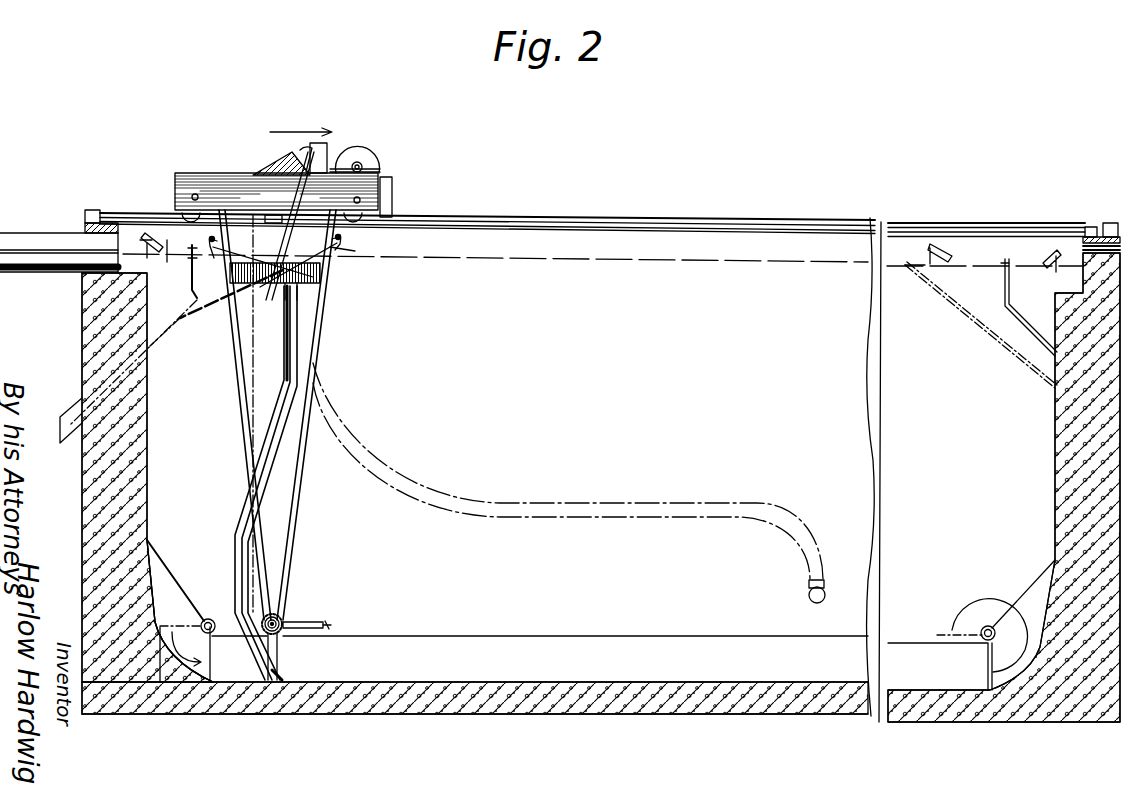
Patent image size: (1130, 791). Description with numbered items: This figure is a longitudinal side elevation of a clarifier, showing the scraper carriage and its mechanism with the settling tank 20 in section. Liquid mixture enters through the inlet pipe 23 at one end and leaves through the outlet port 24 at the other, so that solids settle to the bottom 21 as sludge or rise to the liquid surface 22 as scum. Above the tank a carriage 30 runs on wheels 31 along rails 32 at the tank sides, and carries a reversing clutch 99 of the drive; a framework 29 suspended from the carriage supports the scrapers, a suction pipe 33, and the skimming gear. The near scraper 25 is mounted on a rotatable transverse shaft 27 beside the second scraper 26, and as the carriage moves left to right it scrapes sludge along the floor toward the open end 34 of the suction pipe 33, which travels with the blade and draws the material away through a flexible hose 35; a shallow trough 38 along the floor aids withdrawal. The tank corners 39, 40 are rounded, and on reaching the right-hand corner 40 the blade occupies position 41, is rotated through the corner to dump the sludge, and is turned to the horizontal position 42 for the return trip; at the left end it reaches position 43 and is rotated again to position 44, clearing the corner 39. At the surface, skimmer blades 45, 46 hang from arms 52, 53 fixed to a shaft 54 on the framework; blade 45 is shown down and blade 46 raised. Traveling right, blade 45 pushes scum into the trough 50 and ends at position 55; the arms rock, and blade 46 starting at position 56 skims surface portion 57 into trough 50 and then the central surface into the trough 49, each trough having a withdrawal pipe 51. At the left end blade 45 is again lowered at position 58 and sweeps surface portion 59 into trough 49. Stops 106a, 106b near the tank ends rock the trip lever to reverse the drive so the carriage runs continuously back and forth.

The settling tank 20 is at (143, 442).
The bottom 21 is at (598, 683).
The liquid surface 22 is at (622, 261).
The inlet pipe 23 is at (27, 266).
The outlet port 24 is at (1087, 232).
The scraper 25 is at (280, 661).
The scraper 26 is at (325, 627).
The transverse shaft 27 is at (282, 619).
The framework 29 is at (303, 482).
The carriage 30 is at (197, 175).
The wheels 31 is at (168, 252).
The rails 32 is at (585, 212).
The suction pipe 33 is at (288, 356).
The open end 34 is at (257, 712).
The flexible hose 35 is at (455, 498).
The shallow trough 38 is at (467, 684).
The rounded corner 39 is at (173, 668).
The rounded corner 40 is at (1020, 694).
The blade position 41 is at (986, 660).
The horizontal position 42 is at (956, 625).
The blade position 43 is at (162, 623).
The blade position 44 is at (211, 662).
The skimmer blade 45 is at (209, 247).
The skimmer blade 46 is at (345, 247).
The open trough 49 is at (190, 287).
The open trough 50 is at (942, 288).
The withdrawal pipe 51 is at (74, 408).
The arm 52 is at (262, 263).
The arm 53 is at (347, 229).
The shaft 54 is at (284, 280).
The blade position 55 is at (928, 252).
The blade position 56 is at (1046, 256).
The surface portion 57 is at (1029, 307).
The blade position 58 is at (146, 240).
The surface portion 59 is at (160, 236).
The reversing clutch 99 is at (360, 147).
The stop 106a is at (278, 216).
The stop 106b is at (1106, 223).